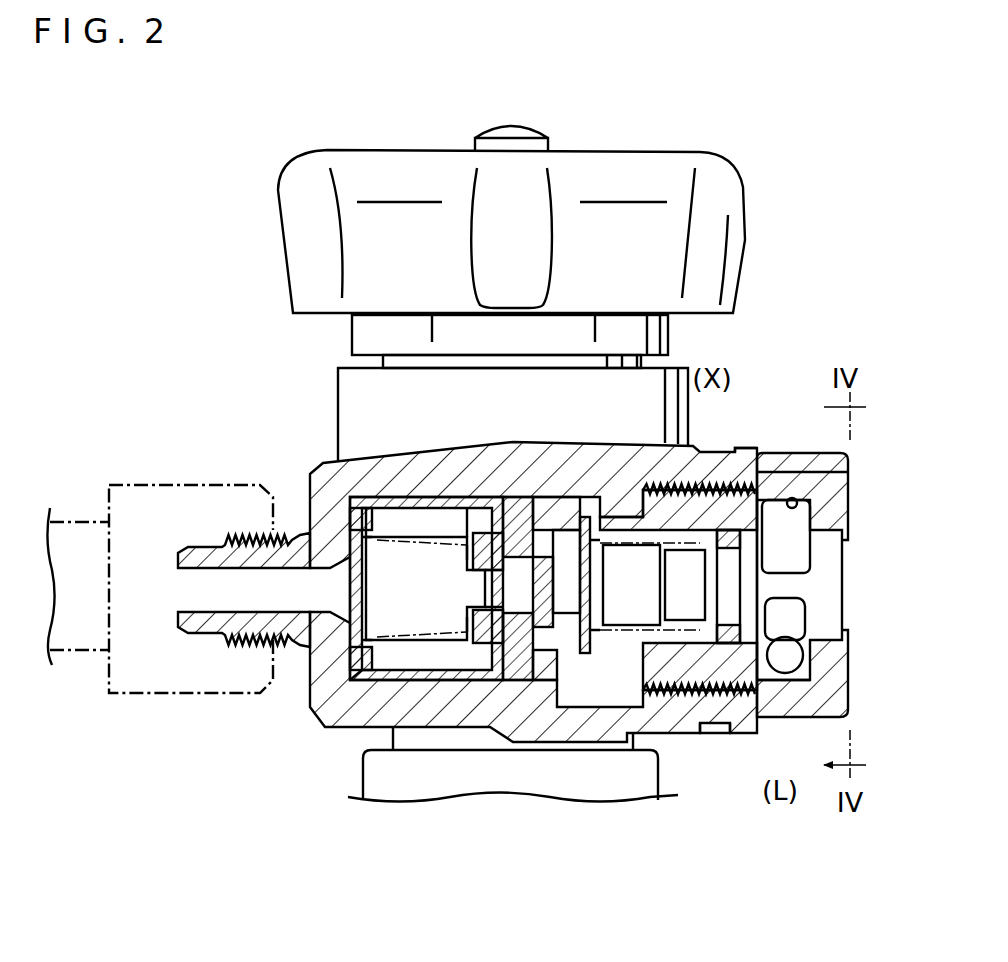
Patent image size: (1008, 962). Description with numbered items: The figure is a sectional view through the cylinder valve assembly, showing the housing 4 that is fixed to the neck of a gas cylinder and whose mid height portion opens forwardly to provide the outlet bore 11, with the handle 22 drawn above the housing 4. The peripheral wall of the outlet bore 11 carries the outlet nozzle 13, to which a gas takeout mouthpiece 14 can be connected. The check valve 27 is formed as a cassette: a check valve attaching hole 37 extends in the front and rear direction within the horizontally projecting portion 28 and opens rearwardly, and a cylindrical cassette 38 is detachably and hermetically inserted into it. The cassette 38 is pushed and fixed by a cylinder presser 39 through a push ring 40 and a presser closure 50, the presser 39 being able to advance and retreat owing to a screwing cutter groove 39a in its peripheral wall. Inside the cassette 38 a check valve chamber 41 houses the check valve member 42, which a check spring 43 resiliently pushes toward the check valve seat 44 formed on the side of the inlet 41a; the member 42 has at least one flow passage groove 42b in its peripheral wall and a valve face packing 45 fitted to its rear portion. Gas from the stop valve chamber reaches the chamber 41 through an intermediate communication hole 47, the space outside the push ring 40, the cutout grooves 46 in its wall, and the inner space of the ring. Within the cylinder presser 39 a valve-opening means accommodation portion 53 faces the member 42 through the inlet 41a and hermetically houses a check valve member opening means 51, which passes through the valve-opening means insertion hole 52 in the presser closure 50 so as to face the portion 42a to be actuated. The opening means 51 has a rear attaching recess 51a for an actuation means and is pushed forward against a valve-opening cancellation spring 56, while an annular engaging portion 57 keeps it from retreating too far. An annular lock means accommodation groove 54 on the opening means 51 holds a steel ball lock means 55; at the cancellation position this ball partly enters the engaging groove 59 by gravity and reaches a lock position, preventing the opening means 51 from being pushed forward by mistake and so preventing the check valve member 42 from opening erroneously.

The housing 4 is at (356, 775).
The outlet bore 11 is at (178, 605).
The outlet nozzle 13 is at (205, 545).
The gas takeout mouthpiece 14 is at (133, 482).
The handle knob 22 is at (292, 222).
The check valve 27 is at (360, 482).
The horizontally projecting portion 28 is at (502, 460).
The check valve attaching hole 37 is at (432, 682).
The cylindrical cassette 38 is at (385, 717).
The cylinder presser 39 is at (843, 490).
The screwing cutter groove 39a is at (832, 465).
The push ring 40 is at (548, 560).
The check valve chamber 41 is at (417, 682).
The inlet of the check valve chamber 41a is at (458, 682).
The check valve member 42 is at (484, 682).
The portion to be actuated for valve opening 42a is at (590, 710).
The flow passage groove 42b is at (440, 517).
The check spring 43 is at (340, 668).
The check valve seat 44 is at (490, 682).
The valve face packing 45 is at (480, 523).
The cutout grooves 46 is at (558, 530).
The intermediate communication hole 47 is at (597, 515).
The presser closure 50 is at (620, 520).
The check valve member opening means 51 is at (688, 545).
The attaching recess 51a is at (832, 570).
The valve-opening means insertion hole 52 is at (645, 722).
The valve-opening means accommodation portion 53 is at (648, 655).
The lock means accommodation groove 54 is at (812, 622).
The lock means 55 is at (778, 668).
The valve-opening cancellation spring 56 is at (733, 480).
The annular engaging portion 57 is at (850, 660).
The engaging groove 59 is at (797, 505).